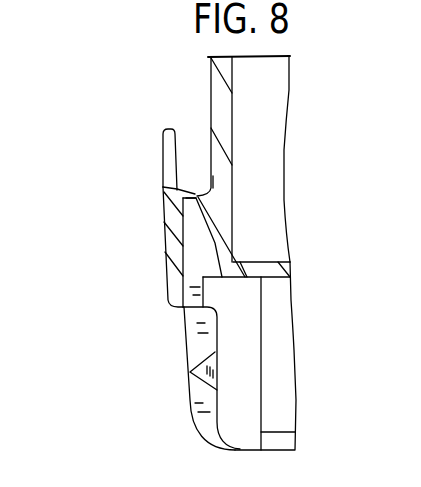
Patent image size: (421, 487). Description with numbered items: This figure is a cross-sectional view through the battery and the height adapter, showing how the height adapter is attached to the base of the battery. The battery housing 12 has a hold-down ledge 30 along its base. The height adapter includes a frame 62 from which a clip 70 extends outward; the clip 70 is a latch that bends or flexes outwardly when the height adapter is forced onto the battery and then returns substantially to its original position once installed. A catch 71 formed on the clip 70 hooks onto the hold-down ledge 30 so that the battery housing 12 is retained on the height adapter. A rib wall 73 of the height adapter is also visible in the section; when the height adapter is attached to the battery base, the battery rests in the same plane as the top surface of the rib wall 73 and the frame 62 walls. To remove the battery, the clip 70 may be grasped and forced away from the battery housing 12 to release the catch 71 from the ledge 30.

The battery housing 12 is at (222, 103).
The hold-down ledge 30 is at (205, 220).
The frame 62 is at (282, 356).
The clip 70 is at (170, 213).
The catch 71 is at (195, 190).
The rib wall 73 is at (167, 152).